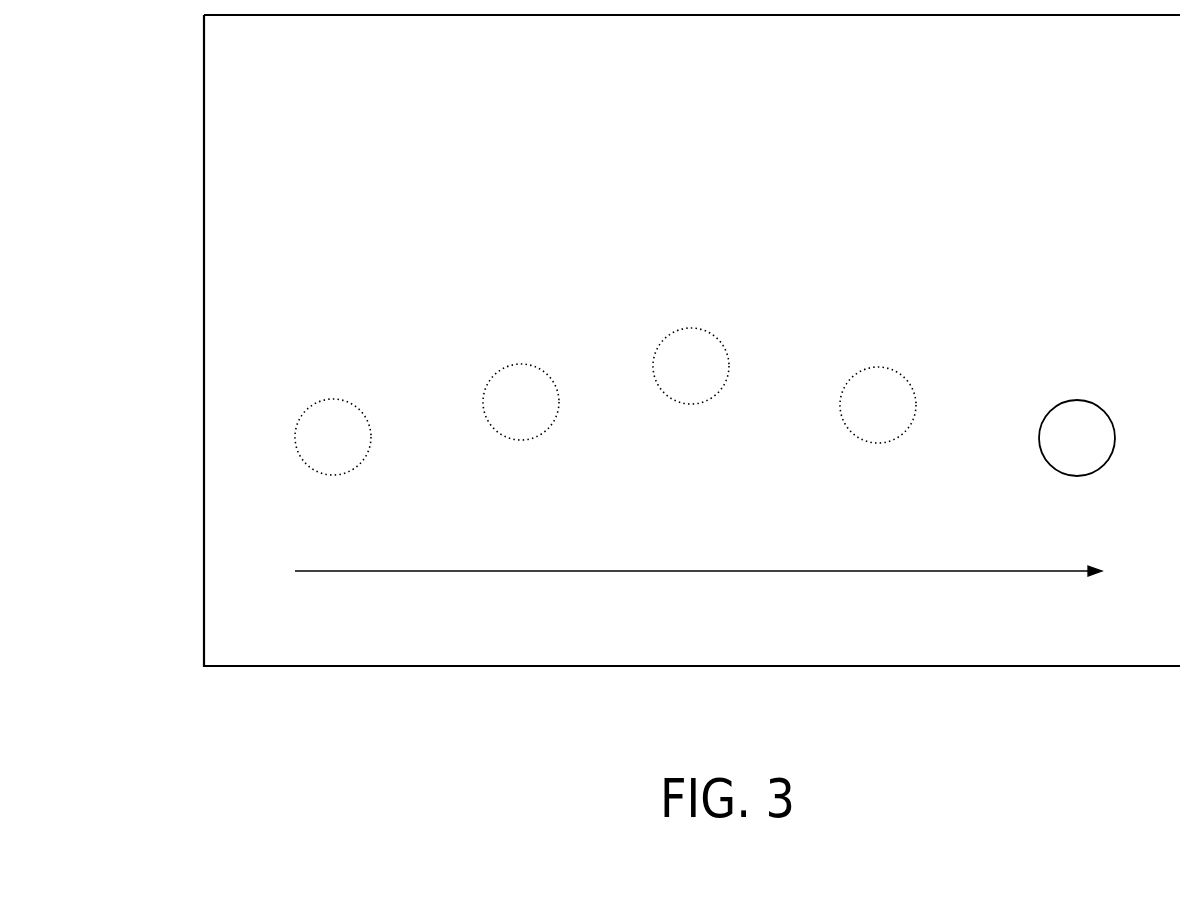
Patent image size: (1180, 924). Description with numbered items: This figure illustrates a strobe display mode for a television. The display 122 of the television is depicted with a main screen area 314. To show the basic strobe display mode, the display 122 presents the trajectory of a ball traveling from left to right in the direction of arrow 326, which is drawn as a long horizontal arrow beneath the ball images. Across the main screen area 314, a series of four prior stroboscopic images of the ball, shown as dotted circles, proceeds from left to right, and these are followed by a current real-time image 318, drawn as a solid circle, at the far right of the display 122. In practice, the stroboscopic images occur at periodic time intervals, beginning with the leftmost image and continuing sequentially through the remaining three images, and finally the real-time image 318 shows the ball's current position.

The display 122 is at (338, 666).
The main screen area 314 is at (333, 207).
The real-time image 318 is at (1077, 398).
The arrow 326 is at (858, 571).